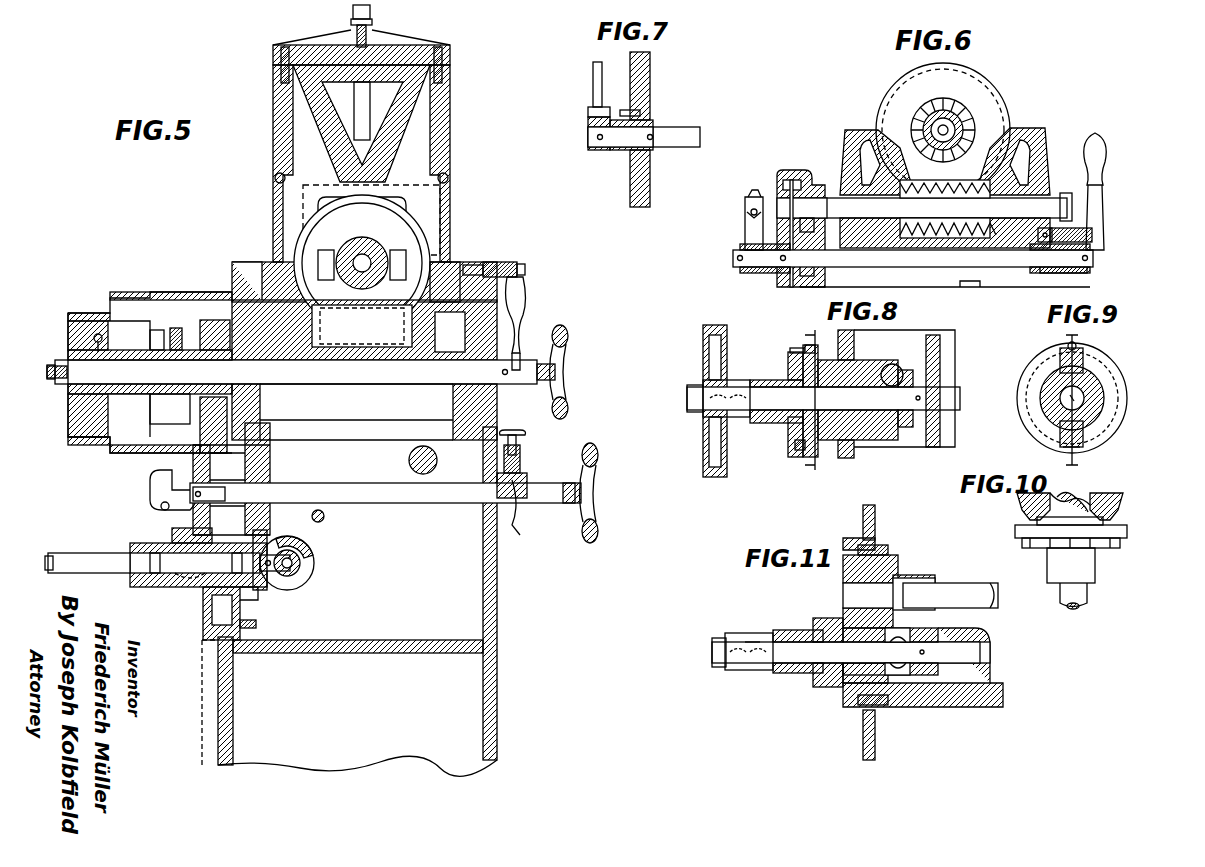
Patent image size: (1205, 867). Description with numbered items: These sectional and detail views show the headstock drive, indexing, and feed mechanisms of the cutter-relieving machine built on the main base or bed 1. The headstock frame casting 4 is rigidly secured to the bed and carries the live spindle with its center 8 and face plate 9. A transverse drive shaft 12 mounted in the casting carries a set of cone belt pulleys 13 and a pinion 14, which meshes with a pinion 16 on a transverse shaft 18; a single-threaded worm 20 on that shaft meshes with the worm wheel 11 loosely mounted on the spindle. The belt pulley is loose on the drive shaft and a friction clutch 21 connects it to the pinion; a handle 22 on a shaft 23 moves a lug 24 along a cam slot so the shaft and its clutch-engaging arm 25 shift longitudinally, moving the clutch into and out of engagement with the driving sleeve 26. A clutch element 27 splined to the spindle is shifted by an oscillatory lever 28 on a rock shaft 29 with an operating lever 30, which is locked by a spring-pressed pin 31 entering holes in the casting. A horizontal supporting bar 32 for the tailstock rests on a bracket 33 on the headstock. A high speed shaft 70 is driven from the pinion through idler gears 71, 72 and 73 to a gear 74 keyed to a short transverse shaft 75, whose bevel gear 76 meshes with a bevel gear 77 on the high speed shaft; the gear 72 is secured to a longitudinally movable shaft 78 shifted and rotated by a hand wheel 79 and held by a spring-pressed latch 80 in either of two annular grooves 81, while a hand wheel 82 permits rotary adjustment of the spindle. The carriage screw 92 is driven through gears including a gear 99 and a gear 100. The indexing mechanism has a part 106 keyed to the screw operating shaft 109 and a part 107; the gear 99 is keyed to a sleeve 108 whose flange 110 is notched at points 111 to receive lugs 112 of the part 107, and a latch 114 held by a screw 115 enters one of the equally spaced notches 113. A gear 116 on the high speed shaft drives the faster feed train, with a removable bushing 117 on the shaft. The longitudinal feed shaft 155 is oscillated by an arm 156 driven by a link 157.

In FIG. 5, the main base or bed 1 is at (498, 640).
In FIG. 5, the frame casting 4 is at (460, 262).
In FIG. 6, the worm wheel 11 is at (920, 182).
In FIG. 5, the drive shaft 12 is at (312, 384).
In FIG. 5, the cone belt pulleys 13 is at (115, 312).
In FIG. 5, the pinion 14 is at (212, 350).
In FIG. 6, the pinion 16 is at (790, 180).
In FIG. 6, the transverse shaft 18 is at (832, 207).
In FIG. 6, the worm 20 is at (900, 232).
In FIG. 5, the friction clutch 21 is at (166, 330).
In FIG. 5, the handle 22 is at (523, 296).
In FIG. 6, the handle 22 is at (1104, 156).
In FIG. 6, the shaft 23 is at (983, 262).
In FIG. 6, the lug 24 is at (1048, 233).
In FIG. 5, the clutch-engaging arm 25 is at (178, 328).
In FIG. 6, the clutch-engaging arm 25 is at (748, 238).
In FIG. 5, the driving sleeve 26 is at (68, 360).
In FIG. 5, the clutch element 27 is at (360, 245).
In FIG. 5, the oscillatory lever 28 is at (268, 270).
In FIG. 5, the rock shaft 29 is at (366, 318).
In FIG. 5, the operating lever 30 is at (510, 262).
In FIG. 5, the spring-pressed pin 31 is at (525, 270).
In FIG. 5, the horizontal supporting bar 32 is at (305, 112).
In FIG. 5, the bracket 33 is at (418, 50).
In FIG. 5, the high speed shaft 70 is at (292, 568).
In FIG. 11, the high speed shaft 70 is at (985, 603).
In FIG. 5, the idler gear 71 is at (205, 415).
In FIG. 5, the idler gear 72 is at (250, 470).
In FIG. 5, the idler gear 73 is at (170, 486).
In FIG. 5, the gear 74 is at (182, 540).
In FIG. 5, the short transverse shaft 75 is at (130, 560).
In FIG. 5, the bevel gear 76 is at (252, 598).
In FIG. 5, the bevel gear 77 is at (305, 548).
In FIG. 5, the longitudinally movable shaft 78 is at (348, 495).
In FIG. 5, the hand wheel 79 is at (590, 448).
In FIG. 5, the spring-pressed latch 80 is at (520, 434).
In FIG. 5, the annular grooves 81 is at (525, 532).
In FIG. 5, the hand wheel 82 is at (568, 334).
In FIG. 5, the screw 92 is at (441, 455).
In FIG. 8, the gear 99 is at (900, 430).
In FIG. 11, the gear 99 is at (900, 685).
In FIG. 8, the gear 100 is at (703, 338).
In FIG. 8, the indexing part 106 is at (780, 423).
In FIG. 10, the indexing part 106 is at (1085, 570).
In FIG. 8, the indexing part 107 is at (800, 458).
In FIG. 9, the indexing part 107 is at (1120, 371).
In FIG. 10, the indexing part 107 is at (1127, 530).
In FIG. 8, the sleeve 108 is at (868, 372).
In FIG. 10, the sleeve 108 is at (1022, 505).
In FIG. 11, the sleeve 108 is at (830, 630).
In FIG. 8, the screw operating shaft 109 is at (768, 388).
In FIG. 10, the screw operating shaft 109 is at (1087, 598).
In FIG. 11, the screw operating shaft 109 is at (745, 665).
In FIG. 9, the flange 110 is at (1104, 398).
In FIG. 10, the flange 110 is at (1103, 518).
In FIG. 9, the notches 111 is at (1083, 360).
In FIG. 9, the lugs 112 is at (1063, 448).
In FIG. 10, the lugs 112 is at (1070, 515).
In FIG. 8, the notches 113 is at (795, 448).
In FIG. 9, the notches 113 is at (1025, 378).
In FIG. 10, the notches 113 is at (1120, 543).
In FIG. 8, the latch 114 is at (790, 349).
In FIG. 8, the screw 115 is at (808, 344).
In FIG. 9, the screw 115 is at (1066, 346).
In FIG. 11, the gear 116 is at (905, 578).
In FIG. 11, the bushing 117 is at (795, 630).
In FIG. 5, the longitudinal feed shaft 155 is at (325, 516).
In FIG. 7, the longitudinal feed shaft 155 is at (690, 132).
In FIG. 7, the arm 156 is at (590, 125).
In FIG. 7, the link 157 is at (594, 83).
In FIG. 9, the center 8 is at (1066, 397).
In FIG. 8, the face plate 9 is at (812, 465).